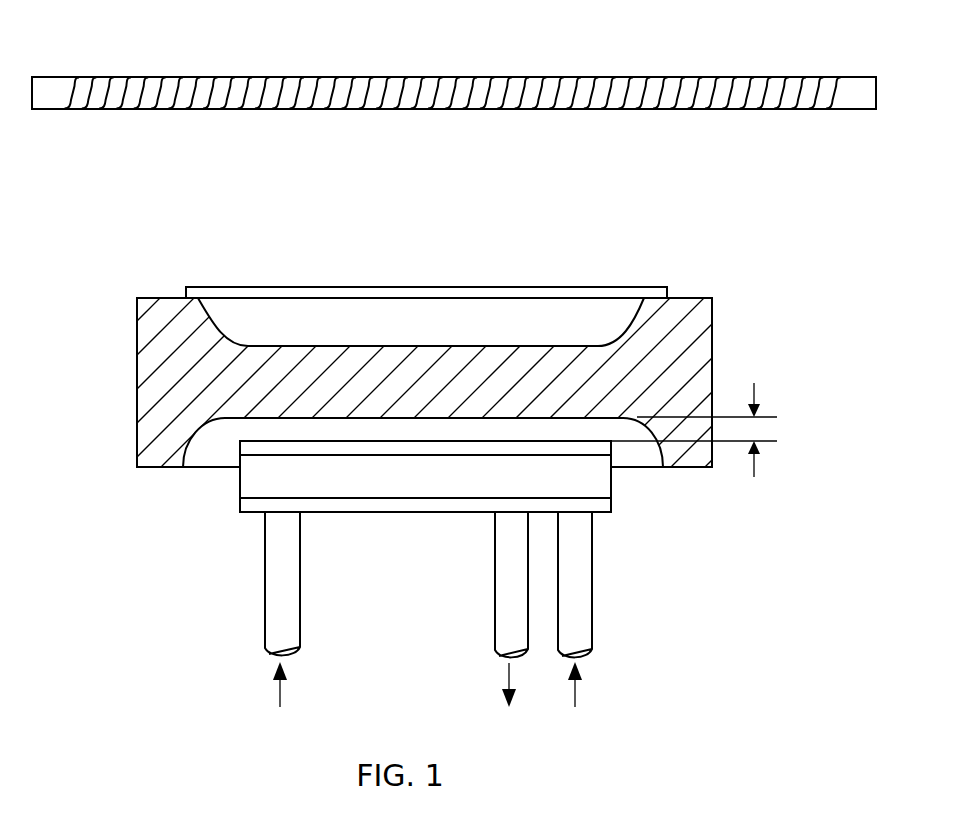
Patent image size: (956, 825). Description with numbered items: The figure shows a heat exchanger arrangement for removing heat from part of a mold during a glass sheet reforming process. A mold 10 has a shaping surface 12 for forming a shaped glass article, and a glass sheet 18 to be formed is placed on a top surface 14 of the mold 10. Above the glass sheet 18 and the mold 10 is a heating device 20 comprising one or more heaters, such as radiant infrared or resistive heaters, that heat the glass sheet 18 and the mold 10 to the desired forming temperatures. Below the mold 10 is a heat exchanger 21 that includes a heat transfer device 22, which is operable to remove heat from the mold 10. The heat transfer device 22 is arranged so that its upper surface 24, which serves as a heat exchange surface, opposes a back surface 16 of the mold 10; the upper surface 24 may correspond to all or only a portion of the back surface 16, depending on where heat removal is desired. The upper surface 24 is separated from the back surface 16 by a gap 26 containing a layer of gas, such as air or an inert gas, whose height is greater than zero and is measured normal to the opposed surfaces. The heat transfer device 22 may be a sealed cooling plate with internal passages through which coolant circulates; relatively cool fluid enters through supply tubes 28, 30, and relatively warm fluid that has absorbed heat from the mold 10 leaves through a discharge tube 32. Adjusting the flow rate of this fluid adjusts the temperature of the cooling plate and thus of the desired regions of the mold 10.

The mold 10 is at (712, 352).
The shaping surface 12 is at (575, 346).
The top surface 14 is at (162, 298).
The back surface 16 is at (382, 419).
The glass sheet 18 is at (397, 287).
The heating device 20 is at (500, 76).
The heat exchanger 21 is at (618, 487).
The heat transfer device 22 is at (238, 482).
The upper surface 24 is at (412, 442).
The gap 26 is at (694, 444).
The supply tube 28 is at (300, 603).
The supply tube 30 is at (592, 596).
The discharge tube 32 is at (495, 623).